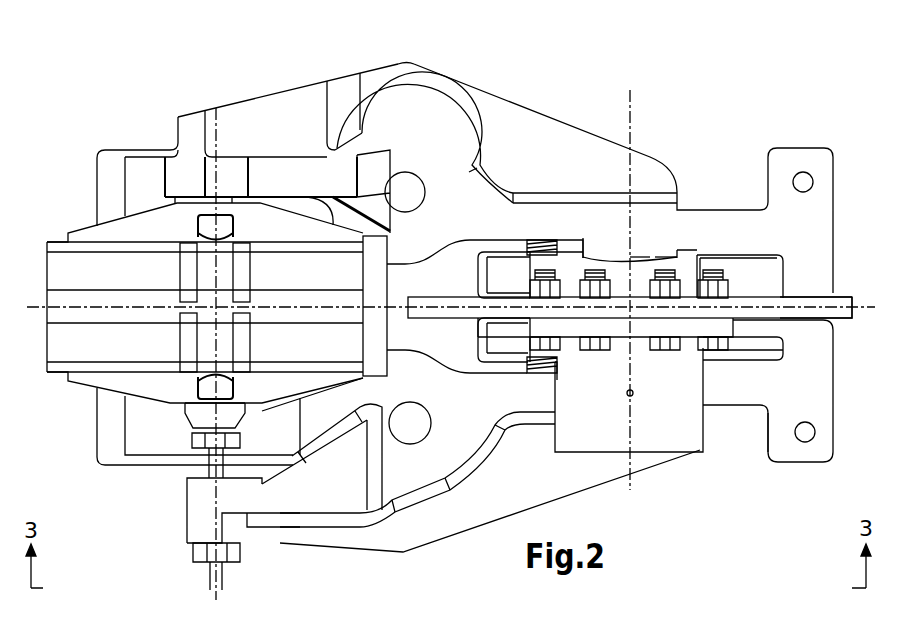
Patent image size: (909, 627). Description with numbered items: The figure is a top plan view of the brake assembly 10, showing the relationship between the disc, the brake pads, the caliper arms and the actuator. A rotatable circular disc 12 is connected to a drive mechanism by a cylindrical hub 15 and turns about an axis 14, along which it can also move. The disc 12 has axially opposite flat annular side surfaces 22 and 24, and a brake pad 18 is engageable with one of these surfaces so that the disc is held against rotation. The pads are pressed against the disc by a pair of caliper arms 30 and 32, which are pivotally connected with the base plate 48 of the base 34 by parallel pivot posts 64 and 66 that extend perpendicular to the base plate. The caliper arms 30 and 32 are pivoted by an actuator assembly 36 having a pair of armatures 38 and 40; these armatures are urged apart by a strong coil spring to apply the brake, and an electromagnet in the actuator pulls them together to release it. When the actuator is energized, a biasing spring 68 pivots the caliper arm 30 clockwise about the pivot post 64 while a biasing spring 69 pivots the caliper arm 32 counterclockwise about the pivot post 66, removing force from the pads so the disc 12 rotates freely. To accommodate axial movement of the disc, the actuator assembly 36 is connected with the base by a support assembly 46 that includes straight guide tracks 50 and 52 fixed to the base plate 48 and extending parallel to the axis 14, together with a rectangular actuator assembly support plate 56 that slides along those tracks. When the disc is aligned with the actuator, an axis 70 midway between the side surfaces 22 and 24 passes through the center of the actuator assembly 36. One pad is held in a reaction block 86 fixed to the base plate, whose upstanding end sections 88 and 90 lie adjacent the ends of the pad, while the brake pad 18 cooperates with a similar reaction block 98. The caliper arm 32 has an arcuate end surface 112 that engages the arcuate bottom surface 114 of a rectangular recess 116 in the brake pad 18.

The brake assembly 10 is at (310, 54).
The circular disc 12 is at (802, 293).
The axis 14 is at (638, 122).
The cylindrical hub 15 is at (663, 418).
The brake pad 18 is at (684, 266).
The side surface 22 is at (808, 310).
The side surface 24 is at (820, 296).
The caliper arm 30 is at (427, 560).
The caliper arm 32 is at (465, 76).
The base 34 is at (814, 146).
The actuator assembly 36 is at (158, 416).
The armature 38 is at (47, 374).
The armature 40 is at (48, 270).
The support assembly 46 is at (122, 431).
The base plate 48 is at (768, 437).
The guide track 50 is at (112, 183).
The guide track 52 is at (315, 424).
The actuator assembly support plate 56 is at (168, 443).
The pivot post 64 is at (410, 423).
The pivot post 66 is at (405, 192).
The biasing spring 68 is at (558, 366).
The biasing spring 69 is at (540, 240).
The axis 70 is at (773, 365).
The reaction block 86 is at (778, 384).
The end section 88 is at (500, 338).
The end section 90 is at (752, 343).
The reaction block 98 is at (778, 246).
The arcuate end surface 112 is at (604, 258).
The arcuate bottom surface 114 is at (642, 258).
The rectangular recess 116 is at (660, 258).